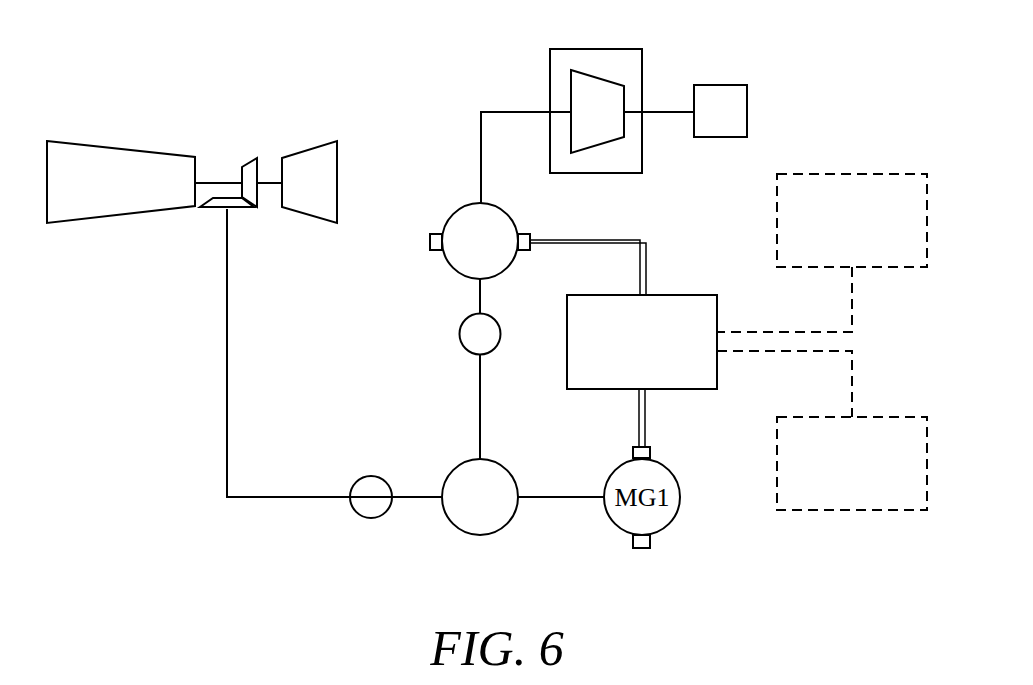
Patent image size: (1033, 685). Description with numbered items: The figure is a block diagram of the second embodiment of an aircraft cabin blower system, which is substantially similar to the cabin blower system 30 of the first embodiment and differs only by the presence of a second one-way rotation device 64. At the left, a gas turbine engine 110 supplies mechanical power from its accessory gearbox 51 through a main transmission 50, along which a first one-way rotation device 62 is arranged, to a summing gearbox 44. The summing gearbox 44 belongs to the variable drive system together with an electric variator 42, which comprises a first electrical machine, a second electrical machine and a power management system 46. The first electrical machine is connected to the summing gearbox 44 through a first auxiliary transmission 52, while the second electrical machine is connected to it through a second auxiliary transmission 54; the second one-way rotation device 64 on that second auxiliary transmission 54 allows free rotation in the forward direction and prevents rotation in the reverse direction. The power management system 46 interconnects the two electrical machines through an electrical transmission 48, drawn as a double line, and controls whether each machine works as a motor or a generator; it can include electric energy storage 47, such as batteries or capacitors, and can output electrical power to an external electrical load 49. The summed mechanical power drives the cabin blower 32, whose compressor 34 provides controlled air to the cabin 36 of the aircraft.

The gas turbine engine 110 is at (203, 127).
The accessory gearbox 51 is at (199, 228).
The main transmission 50 is at (283, 497).
The first one-way rotation device 62 is at (371, 477).
The summing gearbox 44 is at (505, 467).
The second auxiliary transmission 54 is at (480, 385).
The second one-way rotation device 64 is at (459, 334).
The first auxiliary transmission 52 is at (562, 497).
The cabin blower system 30 is at (436, 172).
The cabin blower 32 is at (550, 67).
The compressor 34 is at (585, 72).
The cabin 36 is at (721, 84).
The electrical transmission 48 is at (580, 240).
The power management system 46 is at (678, 390).
The electric variator 42 is at (776, 143).
The external electrical load 49 is at (852, 173).
The electric energy storage 47 is at (840, 511).